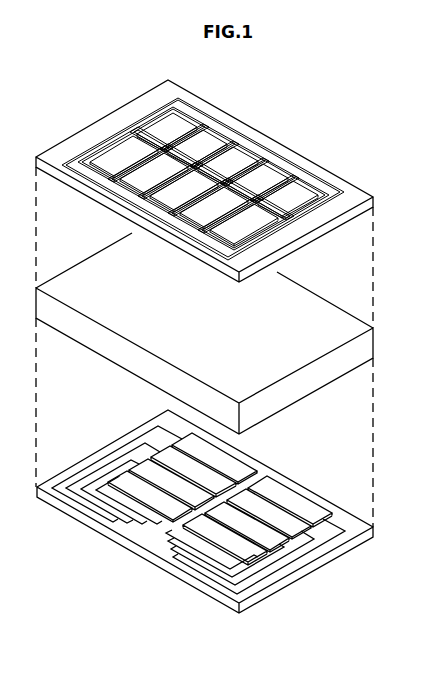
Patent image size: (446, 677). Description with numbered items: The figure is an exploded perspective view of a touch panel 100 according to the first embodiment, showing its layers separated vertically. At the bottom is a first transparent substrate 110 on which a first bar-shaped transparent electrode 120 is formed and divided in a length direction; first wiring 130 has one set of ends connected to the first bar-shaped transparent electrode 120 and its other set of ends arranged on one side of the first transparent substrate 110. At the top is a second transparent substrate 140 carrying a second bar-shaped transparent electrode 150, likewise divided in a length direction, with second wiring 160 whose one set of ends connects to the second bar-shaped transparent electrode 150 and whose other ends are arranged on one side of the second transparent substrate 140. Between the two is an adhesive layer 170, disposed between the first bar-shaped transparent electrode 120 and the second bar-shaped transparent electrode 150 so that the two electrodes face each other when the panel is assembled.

The touch panel 100 is at (48, 110).
The first transparent substrate 110 is at (355, 526).
The first bar-shaped transparent electrode 120 is at (305, 507).
The first wiring 130 is at (328, 548).
The second transparent substrate 140 is at (357, 212).
The second bar-shaped transparent electrode 150 is at (306, 186).
The second wiring 160 is at (333, 177).
The adhesive layer 170 is at (367, 340).